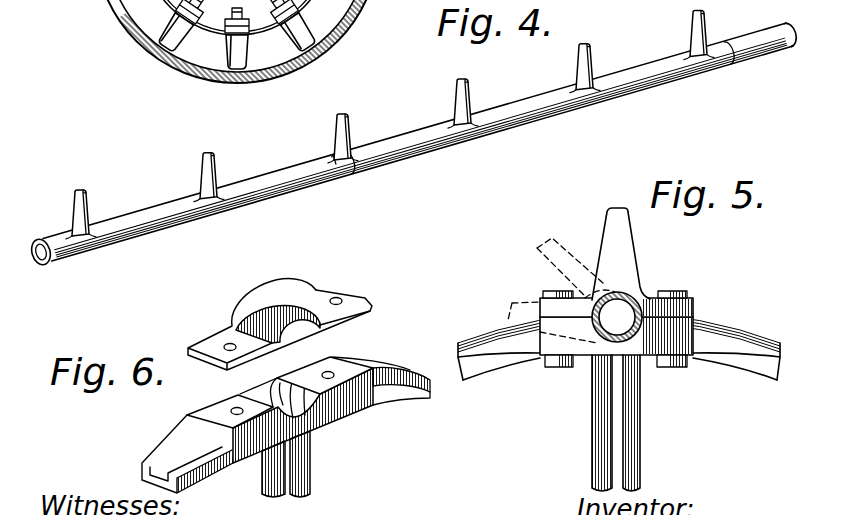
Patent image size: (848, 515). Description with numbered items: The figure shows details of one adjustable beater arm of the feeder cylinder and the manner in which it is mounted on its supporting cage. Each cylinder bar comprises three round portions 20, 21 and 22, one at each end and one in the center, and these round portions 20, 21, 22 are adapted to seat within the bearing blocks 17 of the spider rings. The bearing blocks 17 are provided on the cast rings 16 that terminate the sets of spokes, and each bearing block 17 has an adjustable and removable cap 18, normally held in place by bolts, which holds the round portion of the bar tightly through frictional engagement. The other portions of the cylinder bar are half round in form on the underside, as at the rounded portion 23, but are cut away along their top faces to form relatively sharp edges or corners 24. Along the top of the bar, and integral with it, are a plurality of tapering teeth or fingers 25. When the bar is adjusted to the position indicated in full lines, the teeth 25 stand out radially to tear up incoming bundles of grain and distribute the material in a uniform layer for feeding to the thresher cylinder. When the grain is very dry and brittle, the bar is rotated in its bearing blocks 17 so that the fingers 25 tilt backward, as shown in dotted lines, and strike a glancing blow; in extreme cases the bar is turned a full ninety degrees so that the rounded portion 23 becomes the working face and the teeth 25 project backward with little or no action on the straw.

In FIG. 5, the cast ring 16 is at (481, 340).
In FIG. 6, the cast ring 16 is at (170, 452).
In FIG. 5, the bearing block 17 is at (666, 357).
In FIG. 6, the bearing block 17 is at (347, 413).
In FIG. 5, the adjustable and removable cap 18 is at (666, 310).
In FIG. 6, the adjustable and removable cap 18 is at (270, 300).
In FIG. 4, the round portion 20 is at (55, 240).
In FIG. 4, the round portion 21 is at (385, 140).
In FIG. 4, the round portion 22 is at (757, 36).
In FIG. 4, the half round portion 23 is at (251, 203).
In FIG. 5, the half round portion 23 is at (604, 347).
In FIG. 4, the sharp edge or corner 24 is at (141, 222).
In FIG. 4, the tapering tooth or finger 25 is at (82, 192).
In FIG. 5, the tapering tooth or finger 25 is at (626, 253).